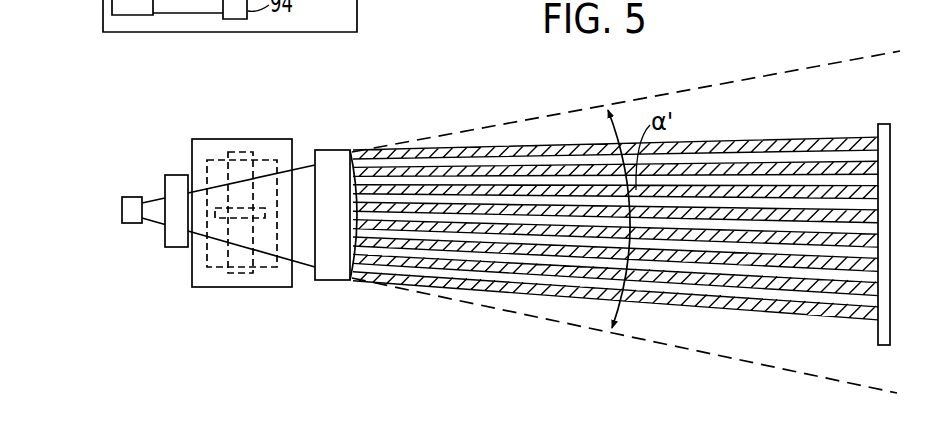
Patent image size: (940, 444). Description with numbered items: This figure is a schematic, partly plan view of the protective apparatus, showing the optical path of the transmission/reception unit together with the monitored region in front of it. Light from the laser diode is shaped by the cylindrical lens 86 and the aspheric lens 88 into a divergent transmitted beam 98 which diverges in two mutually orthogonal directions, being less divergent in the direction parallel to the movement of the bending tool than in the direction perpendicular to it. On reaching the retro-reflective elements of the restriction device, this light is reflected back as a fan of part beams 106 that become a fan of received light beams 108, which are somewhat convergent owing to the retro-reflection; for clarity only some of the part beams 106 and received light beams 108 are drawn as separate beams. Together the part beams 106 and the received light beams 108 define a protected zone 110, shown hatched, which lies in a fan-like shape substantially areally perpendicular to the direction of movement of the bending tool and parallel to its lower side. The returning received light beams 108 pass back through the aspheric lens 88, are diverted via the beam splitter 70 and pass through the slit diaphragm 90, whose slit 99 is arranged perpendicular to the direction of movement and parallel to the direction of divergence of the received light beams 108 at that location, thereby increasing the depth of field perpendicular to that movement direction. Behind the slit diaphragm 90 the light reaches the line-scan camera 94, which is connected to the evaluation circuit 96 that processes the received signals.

The beam splitter 70 is at (284, 283).
The cylindrical lens 86 is at (176, 238).
The aspheric lens 88 is at (338, 262).
The slit diaphragm 90 is at (215, 288).
The line-scan camera 94 is at (239, 280).
The evaluation circuit 96 is at (120, 207).
The transmitted beam 98 is at (738, 82).
The slit 99 is at (222, 138).
The part beams 106 is at (792, 205).
The received light beams 108 is at (588, 203).
The protected zone 110 is at (515, 202).